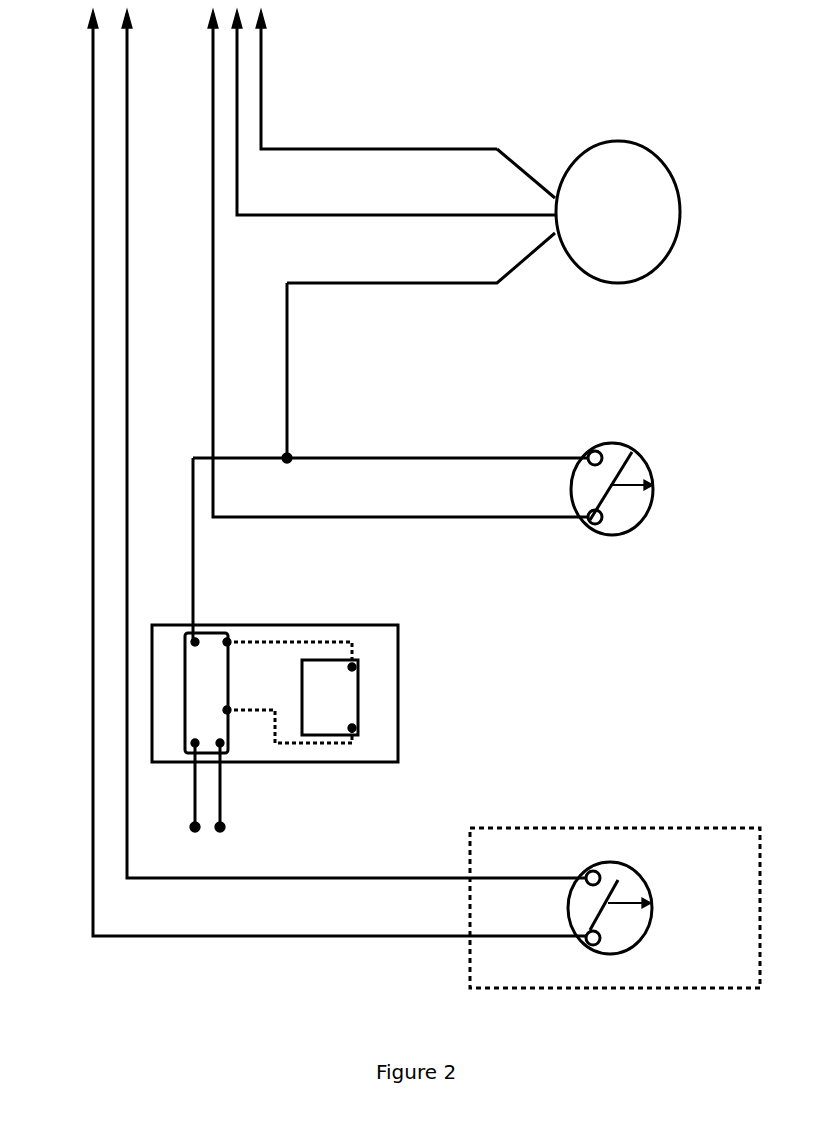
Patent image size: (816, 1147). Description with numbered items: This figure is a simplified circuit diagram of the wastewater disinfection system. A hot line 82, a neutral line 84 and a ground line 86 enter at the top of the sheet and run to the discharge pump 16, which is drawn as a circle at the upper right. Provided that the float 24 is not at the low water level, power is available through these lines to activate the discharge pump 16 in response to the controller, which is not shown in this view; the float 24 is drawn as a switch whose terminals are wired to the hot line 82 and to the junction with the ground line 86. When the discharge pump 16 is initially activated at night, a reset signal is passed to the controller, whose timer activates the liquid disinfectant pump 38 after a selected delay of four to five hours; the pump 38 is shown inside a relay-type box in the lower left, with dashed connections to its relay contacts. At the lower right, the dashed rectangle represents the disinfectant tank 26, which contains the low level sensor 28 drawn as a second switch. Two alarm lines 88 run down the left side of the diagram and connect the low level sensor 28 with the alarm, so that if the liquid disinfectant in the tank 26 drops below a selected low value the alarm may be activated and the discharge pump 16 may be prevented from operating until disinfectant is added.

The discharge pump 16 is at (617, 141).
The float 24 is at (606, 448).
The tank 26 is at (665, 828).
The low level sensor 28 is at (608, 866).
The pump 38 is at (329, 672).
The hot line 82 is at (213, 40).
The neutral line 84 is at (237, 83).
The ground line 86 is at (261, 125).
The alarm lines 88 is at (93, 404).